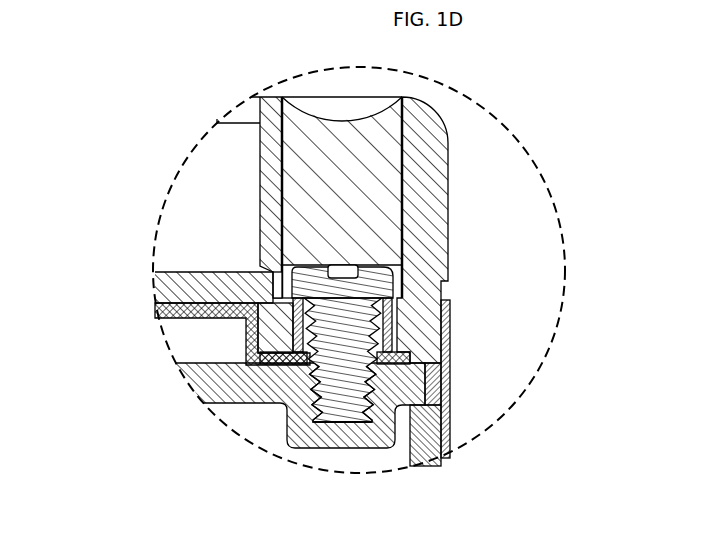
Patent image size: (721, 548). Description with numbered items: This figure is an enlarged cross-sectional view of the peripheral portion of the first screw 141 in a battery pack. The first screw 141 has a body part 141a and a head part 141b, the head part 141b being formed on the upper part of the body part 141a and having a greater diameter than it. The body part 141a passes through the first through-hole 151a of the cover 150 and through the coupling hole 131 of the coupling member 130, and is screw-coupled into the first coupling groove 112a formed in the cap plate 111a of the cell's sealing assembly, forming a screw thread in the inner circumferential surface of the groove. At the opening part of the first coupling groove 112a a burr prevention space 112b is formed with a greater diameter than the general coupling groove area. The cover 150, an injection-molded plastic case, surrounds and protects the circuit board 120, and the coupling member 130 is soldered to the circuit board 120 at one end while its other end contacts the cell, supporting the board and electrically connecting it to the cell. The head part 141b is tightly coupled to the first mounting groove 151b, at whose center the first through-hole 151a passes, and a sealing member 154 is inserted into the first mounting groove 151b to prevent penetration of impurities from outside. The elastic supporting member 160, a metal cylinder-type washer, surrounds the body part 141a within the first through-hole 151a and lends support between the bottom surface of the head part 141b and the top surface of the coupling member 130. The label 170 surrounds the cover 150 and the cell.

The cap plate 111a is at (323, 435).
The first coupling groove 112a is at (425, 455).
The burr prevention space 112b is at (450, 405).
The circuit board 120 is at (180, 288).
The coupling member 130 is at (262, 409).
The coupling hole 131 is at (247, 397).
The first screw 141 is at (490, 343).
The body part 141a is at (395, 298).
The head part 141b is at (398, 280).
The cover 150 is at (435, 160).
The first through-hole 151a is at (243, 334).
The first mounting groove 151b is at (260, 220).
The sealing member 154 is at (372, 150).
The elastic supporting member 160 is at (395, 333).
The label 170 is at (450, 388).